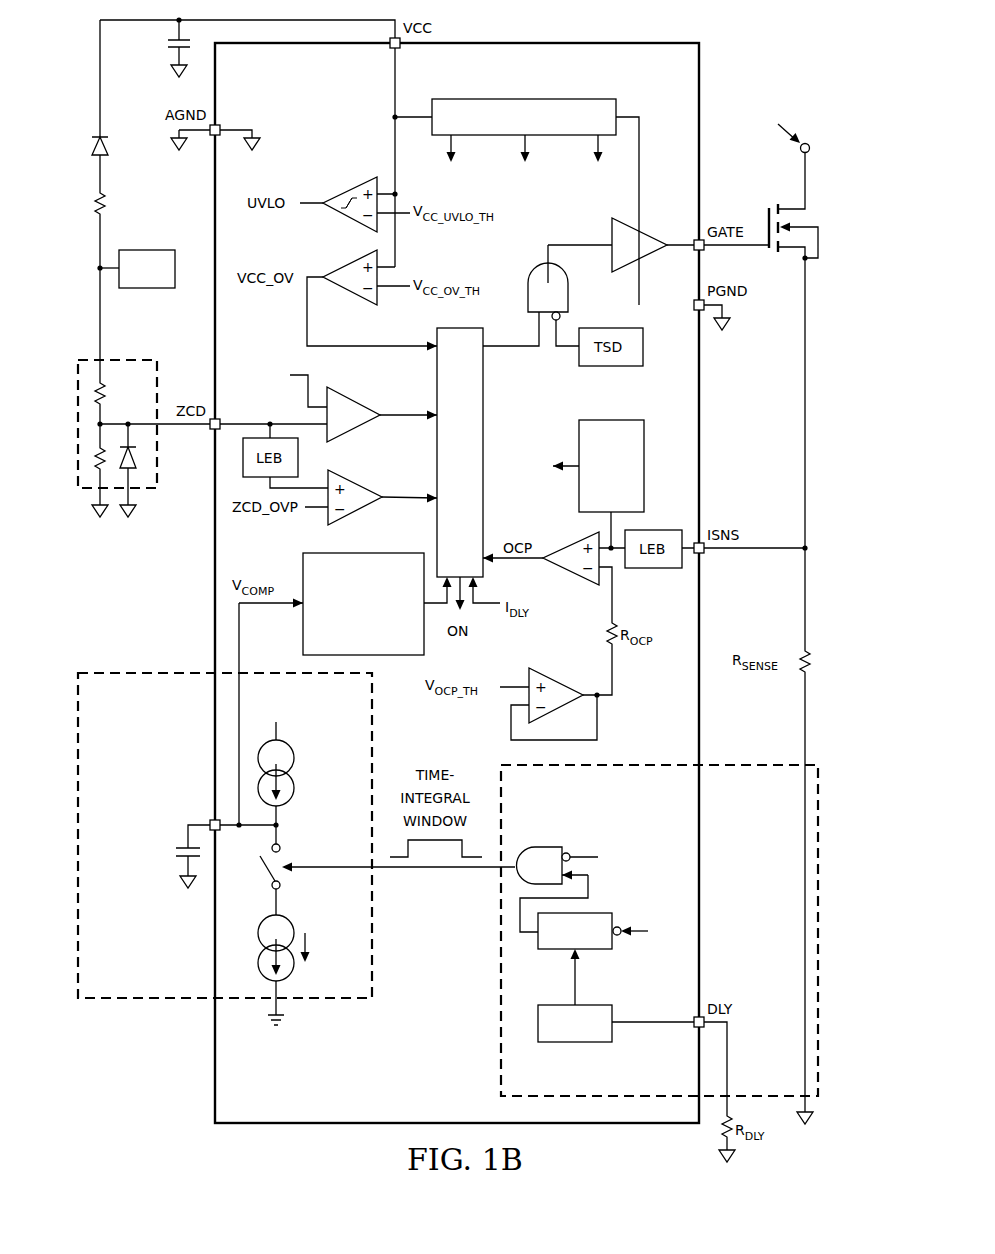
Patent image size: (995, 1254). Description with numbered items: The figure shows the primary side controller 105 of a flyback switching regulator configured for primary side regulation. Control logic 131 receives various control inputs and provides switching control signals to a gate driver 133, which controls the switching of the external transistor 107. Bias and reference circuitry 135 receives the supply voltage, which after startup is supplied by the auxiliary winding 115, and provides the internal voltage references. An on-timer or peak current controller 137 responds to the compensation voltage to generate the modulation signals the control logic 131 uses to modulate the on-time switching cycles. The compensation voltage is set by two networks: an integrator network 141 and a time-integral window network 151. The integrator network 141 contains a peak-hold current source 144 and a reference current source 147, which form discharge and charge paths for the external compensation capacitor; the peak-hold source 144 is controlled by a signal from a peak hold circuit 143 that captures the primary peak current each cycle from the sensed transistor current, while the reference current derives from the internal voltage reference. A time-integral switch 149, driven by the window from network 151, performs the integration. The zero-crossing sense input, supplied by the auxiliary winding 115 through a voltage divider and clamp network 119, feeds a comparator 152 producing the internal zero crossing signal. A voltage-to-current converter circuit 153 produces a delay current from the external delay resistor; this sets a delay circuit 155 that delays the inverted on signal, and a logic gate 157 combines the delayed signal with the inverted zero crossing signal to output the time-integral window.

The primary side controller 105 is at (686, 85).
The transistor 107 is at (757, 212).
The auxiliary winding 115 is at (143, 249).
The voltage divider/clamp network 119 is at (133, 356).
The control logic 131 is at (485, 400).
The gate driver 133 is at (650, 240).
The bias and VREF circuitry 135 is at (541, 98).
The on-timer or peak current controller 137 is at (392, 553).
The integrator network 141 is at (296, 866).
The IPP peak hold circuit 143 is at (624, 420).
The IPP hold current source 144 is at (286, 918).
The IREF current source 147 is at (290, 750).
The time-integral switch 149 is at (287, 858).
The time-integral window network 151 is at (624, 930).
The comparator 152 is at (356, 428).
The V/I converter circuit 153 is at (586, 1043).
The delay circuit 155 is at (557, 950).
The logic gate 157 is at (540, 846).